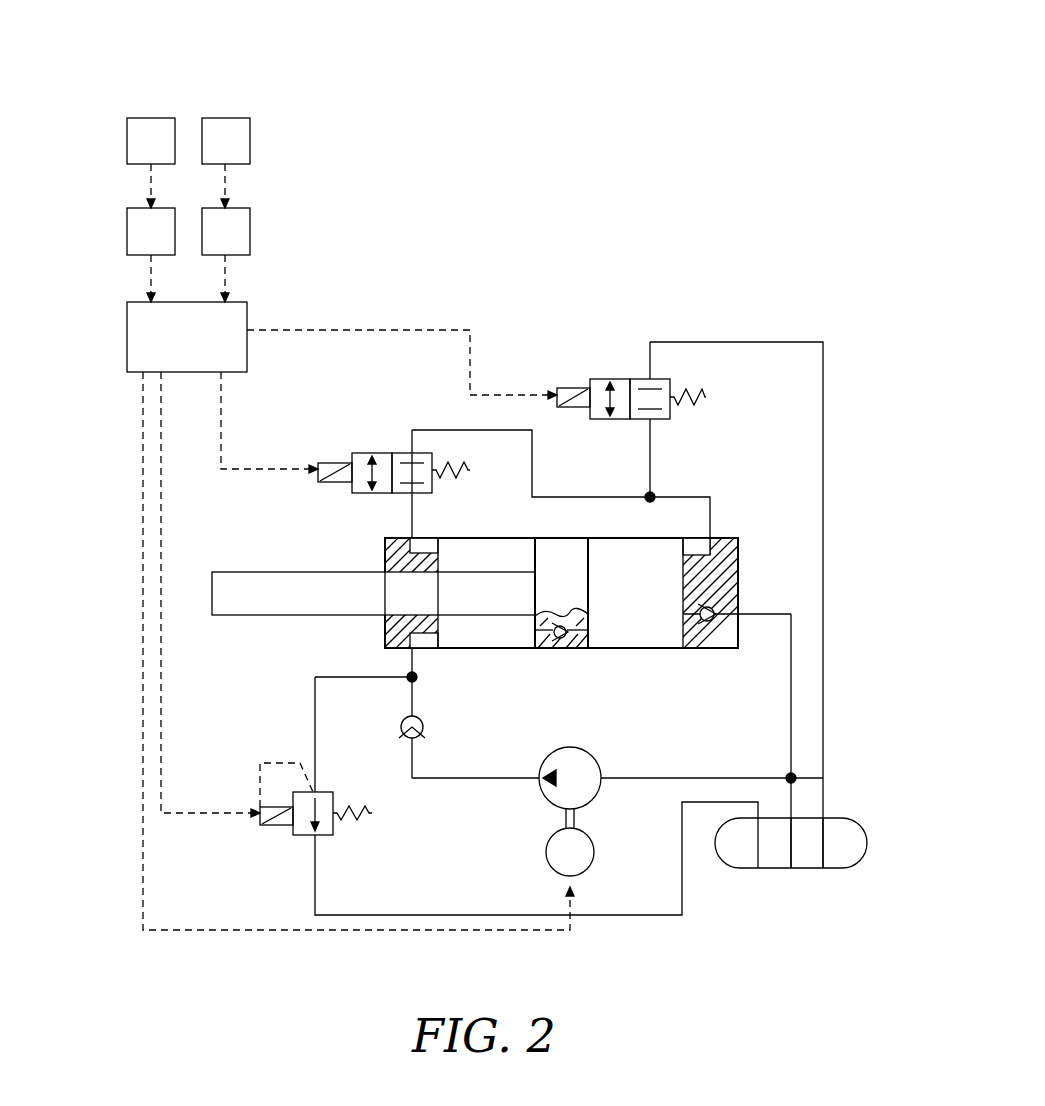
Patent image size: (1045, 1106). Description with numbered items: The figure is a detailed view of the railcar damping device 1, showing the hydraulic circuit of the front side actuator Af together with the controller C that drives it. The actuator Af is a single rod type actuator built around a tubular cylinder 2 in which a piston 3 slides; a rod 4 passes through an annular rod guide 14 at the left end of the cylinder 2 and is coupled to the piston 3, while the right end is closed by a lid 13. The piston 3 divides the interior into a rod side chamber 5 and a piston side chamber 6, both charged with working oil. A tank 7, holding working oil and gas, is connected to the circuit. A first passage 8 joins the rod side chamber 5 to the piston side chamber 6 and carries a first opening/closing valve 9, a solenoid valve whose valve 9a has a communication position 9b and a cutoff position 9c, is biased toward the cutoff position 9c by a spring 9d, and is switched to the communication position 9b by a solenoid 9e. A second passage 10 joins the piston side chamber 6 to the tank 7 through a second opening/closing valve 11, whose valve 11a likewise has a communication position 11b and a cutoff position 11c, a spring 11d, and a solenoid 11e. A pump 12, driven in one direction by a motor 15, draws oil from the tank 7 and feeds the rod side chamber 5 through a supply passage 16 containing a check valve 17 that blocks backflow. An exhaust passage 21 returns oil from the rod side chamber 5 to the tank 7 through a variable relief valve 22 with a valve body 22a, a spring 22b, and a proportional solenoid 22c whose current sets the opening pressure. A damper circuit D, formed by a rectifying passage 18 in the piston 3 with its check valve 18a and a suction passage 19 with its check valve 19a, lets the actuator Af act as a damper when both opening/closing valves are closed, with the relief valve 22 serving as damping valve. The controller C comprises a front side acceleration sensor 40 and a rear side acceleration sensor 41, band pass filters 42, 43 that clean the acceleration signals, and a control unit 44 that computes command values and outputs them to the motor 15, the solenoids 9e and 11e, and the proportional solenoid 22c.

The railcar damping device 1 is at (85, 78).
The cylinder 2 is at (628, 648).
The piston 3 is at (545, 650).
The rod 4 is at (250, 615).
The rod side chamber 5 is at (529, 593).
The piston side chamber 6 is at (636, 604).
The tank 7 is at (835, 818).
The first passage 8 is at (450, 430).
The first opening/closing valve 9 is at (392, 477).
The valve 9a is at (350, 455).
The communication position 9b is at (375, 453).
The cutoff position 9c is at (425, 495).
The spring 9d is at (470, 470).
The solenoid 9e is at (318, 475).
The second passage 10 is at (823, 560).
The second opening/closing valve 11 is at (647, 393).
The valve 11a is at (598, 422).
The communication position 11b is at (613, 379).
The cutoff position 11c is at (660, 422).
The spring 11d is at (706, 397).
The solenoid 11e is at (560, 388).
The pump 12 is at (600, 762).
The lid 13 is at (738, 545).
The rod guide 14 is at (385, 625).
The motor 15 is at (546, 852).
The supply passage 16 is at (410, 700).
The check valve 17 is at (425, 735).
The rectifying passage 18 is at (572, 650).
The check valve 18a is at (563, 650).
The suction passage 19 is at (791, 700).
The check valve 19a is at (706, 623).
The exhaust passage 21 is at (380, 915).
The variable relief valve 22 is at (317, 786).
The valve body 22a is at (297, 835).
The spring 22b is at (372, 813).
The proportional solenoid 22c is at (258, 818).
The front side acceleration sensor 40 is at (127, 142).
The rear side acceleration sensor 41 is at (250, 148).
The band pass filter 42 is at (127, 222).
The band pass filter 43 is at (250, 235).
The control unit 44 is at (247, 320).
The controller C is at (322, 168).
The damper circuit D is at (800, 630).
The front side actuator Af is at (843, 318).